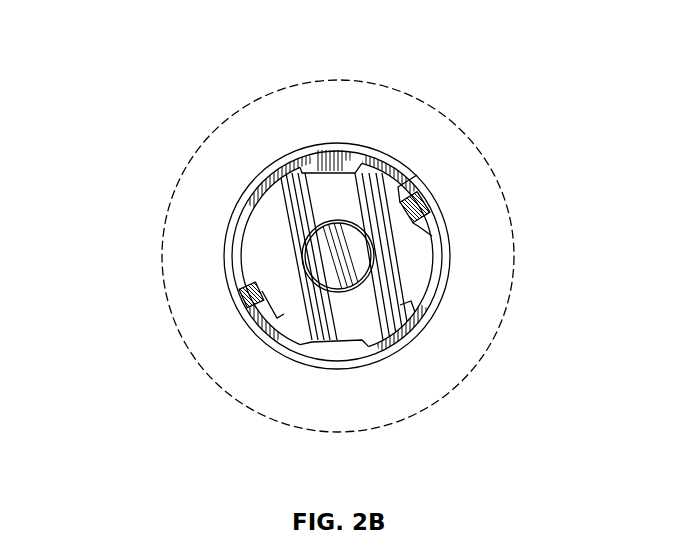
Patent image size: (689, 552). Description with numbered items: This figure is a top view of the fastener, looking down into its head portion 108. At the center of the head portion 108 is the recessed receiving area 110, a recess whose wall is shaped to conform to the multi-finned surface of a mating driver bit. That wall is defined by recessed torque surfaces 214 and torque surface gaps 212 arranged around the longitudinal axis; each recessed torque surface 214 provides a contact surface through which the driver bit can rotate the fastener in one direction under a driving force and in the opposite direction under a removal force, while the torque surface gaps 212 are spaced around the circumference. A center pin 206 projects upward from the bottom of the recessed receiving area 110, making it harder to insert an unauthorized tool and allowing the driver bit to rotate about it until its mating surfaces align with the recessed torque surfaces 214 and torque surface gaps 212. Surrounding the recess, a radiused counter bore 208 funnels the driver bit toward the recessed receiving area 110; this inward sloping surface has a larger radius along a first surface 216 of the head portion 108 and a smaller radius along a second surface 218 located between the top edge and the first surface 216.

The head portion 108 is at (220, 360).
The recessed receiving area 110 is at (392, 220).
The center pin 206 is at (315, 257).
The radiused counter bore 208 is at (240, 285).
The torque surface gaps 212 is at (326, 158).
The recessed torque surfaces 214 is at (388, 163).
The first surface 216 is at (452, 250).
The second surface 218 is at (440, 267).